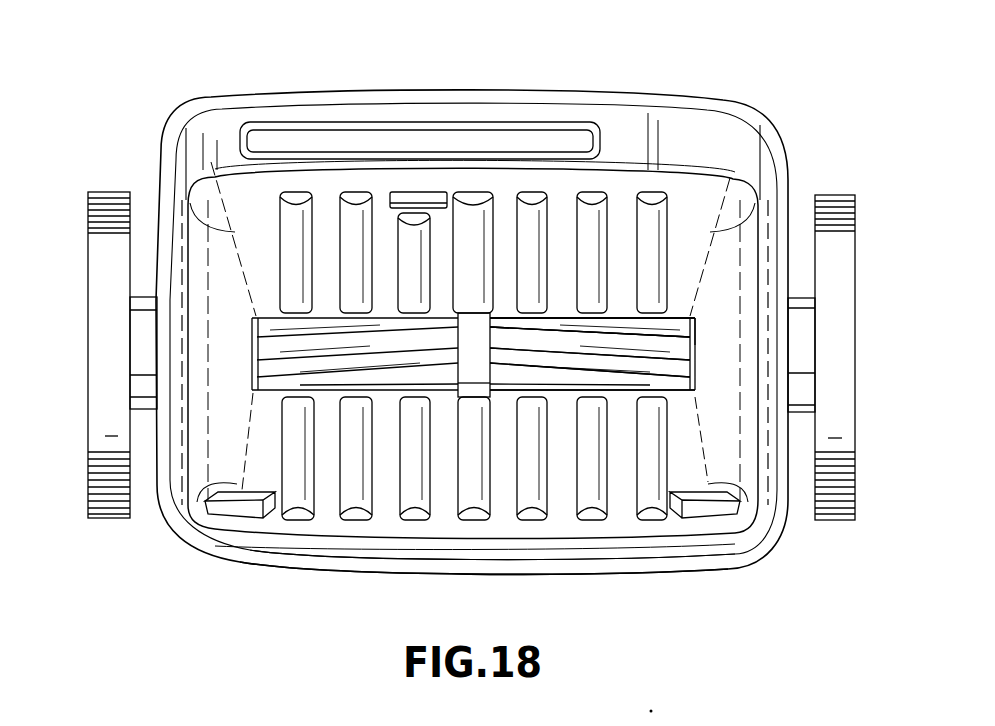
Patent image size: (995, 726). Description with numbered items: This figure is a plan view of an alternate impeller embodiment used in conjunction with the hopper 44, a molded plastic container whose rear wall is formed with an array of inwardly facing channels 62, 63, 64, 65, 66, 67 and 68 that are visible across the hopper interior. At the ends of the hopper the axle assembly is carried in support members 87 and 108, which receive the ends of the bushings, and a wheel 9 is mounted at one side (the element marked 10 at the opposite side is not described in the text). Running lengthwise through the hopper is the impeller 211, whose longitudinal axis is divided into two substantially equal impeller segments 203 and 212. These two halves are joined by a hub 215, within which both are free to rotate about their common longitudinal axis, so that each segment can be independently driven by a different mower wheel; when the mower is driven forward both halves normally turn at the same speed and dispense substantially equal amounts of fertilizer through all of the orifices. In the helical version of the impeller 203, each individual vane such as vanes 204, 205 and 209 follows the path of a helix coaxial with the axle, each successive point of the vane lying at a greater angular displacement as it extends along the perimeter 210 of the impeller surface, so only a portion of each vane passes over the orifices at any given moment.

The wheel 9 is at (830, 195).
The left pedal peg 10 is at (103, 420).
The hopper 44 is at (258, 560).
The inwardly facing channel 62 is at (290, 233).
The inwardly facing channel 63 is at (350, 205).
The inwardly facing channel 64 is at (412, 228).
The inwardly facing channel 65 is at (473, 203).
The inwardly facing channel 66 is at (530, 210).
The inwardly facing channel 67 is at (590, 197).
The inwardly facing channel 68 is at (653, 217).
The support member 87 is at (140, 332).
The support member 108 is at (803, 358).
The impeller 203 is at (557, 345).
The vane 204 is at (683, 343).
The vane 205 is at (680, 323).
The vane 209 is at (690, 382).
The perimeter of the impeller surface 210 is at (608, 350).
The impeller 211 is at (446, 398).
The impeller segment 212 is at (273, 350).
The hub 215 is at (480, 380).